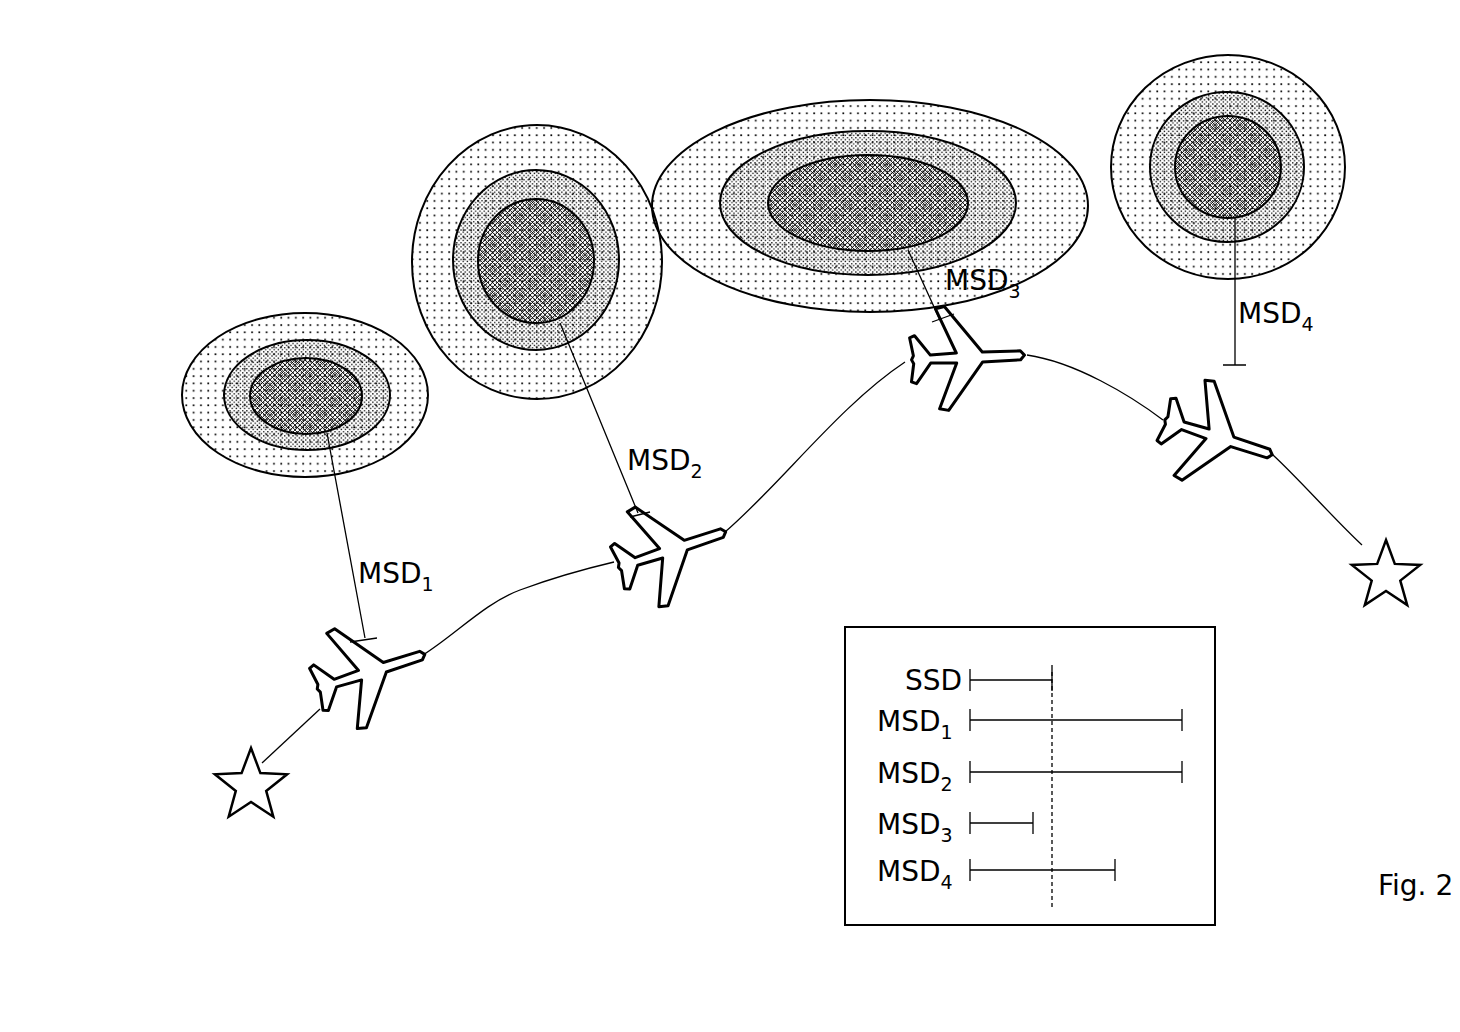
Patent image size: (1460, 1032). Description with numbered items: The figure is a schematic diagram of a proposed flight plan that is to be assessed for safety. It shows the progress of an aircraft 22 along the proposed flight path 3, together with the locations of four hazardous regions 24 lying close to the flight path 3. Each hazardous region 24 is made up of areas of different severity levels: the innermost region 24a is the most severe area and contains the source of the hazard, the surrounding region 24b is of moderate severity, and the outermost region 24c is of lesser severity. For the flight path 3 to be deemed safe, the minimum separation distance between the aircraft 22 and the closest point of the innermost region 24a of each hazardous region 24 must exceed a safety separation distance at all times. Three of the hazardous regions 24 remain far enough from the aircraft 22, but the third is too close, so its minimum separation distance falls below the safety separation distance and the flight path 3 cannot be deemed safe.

The flight path 3 is at (523, 612).
The aircraft 22 is at (402, 744).
The hazardous region 24 is at (765, 288).
The innermost region 24a is at (305, 436).
The surrounding region 24b is at (245, 437).
The outermost region 24c is at (183, 392).